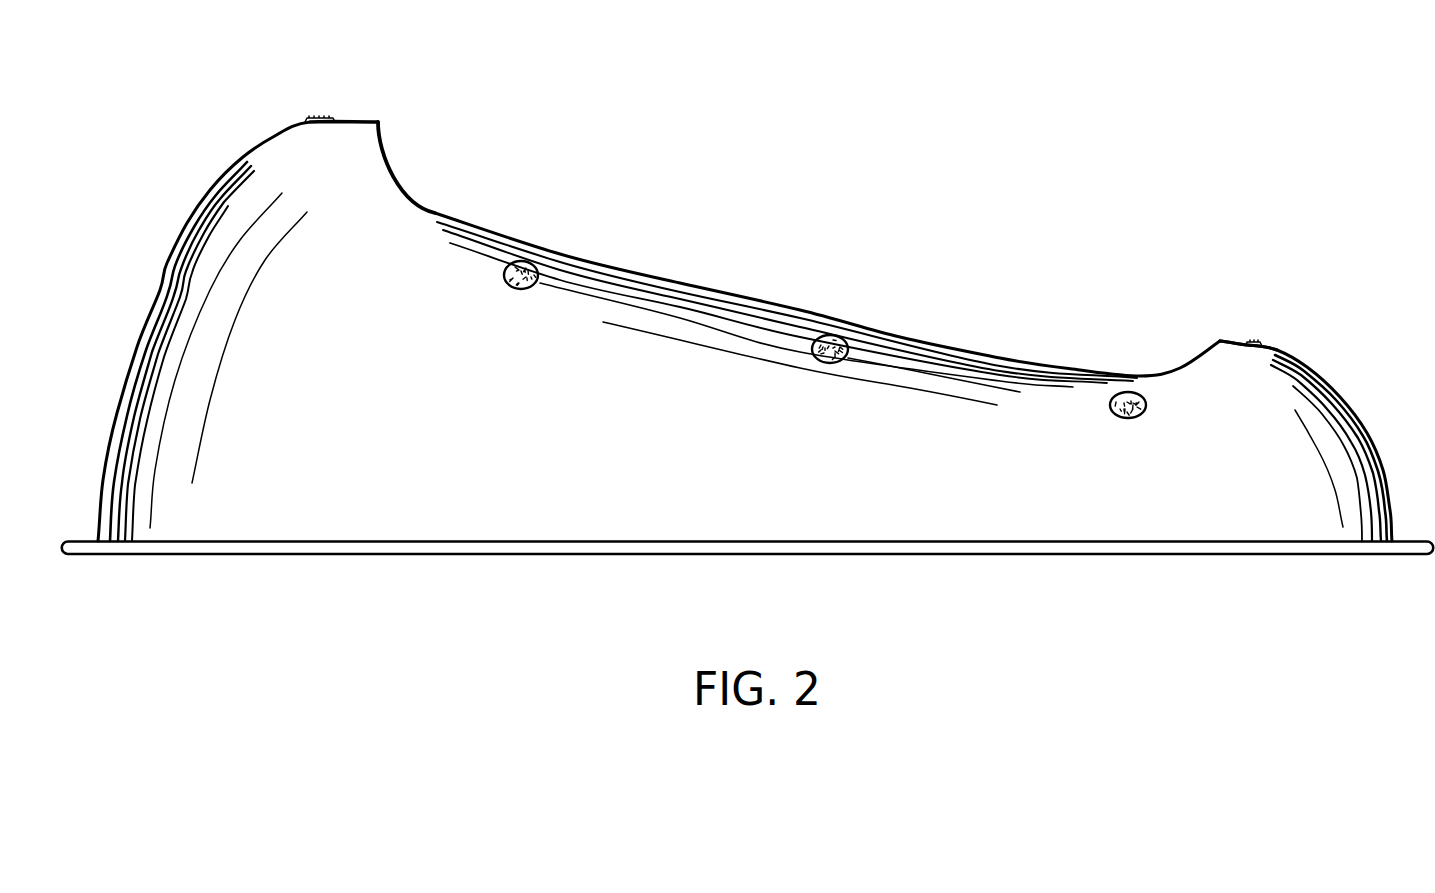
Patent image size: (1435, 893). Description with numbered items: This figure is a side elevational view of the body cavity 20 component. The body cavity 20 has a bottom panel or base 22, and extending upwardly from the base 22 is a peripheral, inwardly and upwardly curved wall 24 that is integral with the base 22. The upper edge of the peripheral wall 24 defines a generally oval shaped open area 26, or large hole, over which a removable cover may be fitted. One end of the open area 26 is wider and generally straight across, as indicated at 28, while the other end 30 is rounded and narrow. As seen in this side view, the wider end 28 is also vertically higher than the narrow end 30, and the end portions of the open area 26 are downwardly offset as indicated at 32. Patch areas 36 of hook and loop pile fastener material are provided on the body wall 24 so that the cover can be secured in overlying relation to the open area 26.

The body cavity 20 is at (744, 283).
The bottom panel or base 22 is at (533, 547).
The peripheral wall 24 is at (652, 456).
The open area 26 is at (1003, 356).
The wide end of open area 28 is at (378, 122).
The narrow end of open area 30 is at (1220, 341).
The downwardly offset end portions 32 is at (385, 148).
The patch areas 36 is at (845, 335).